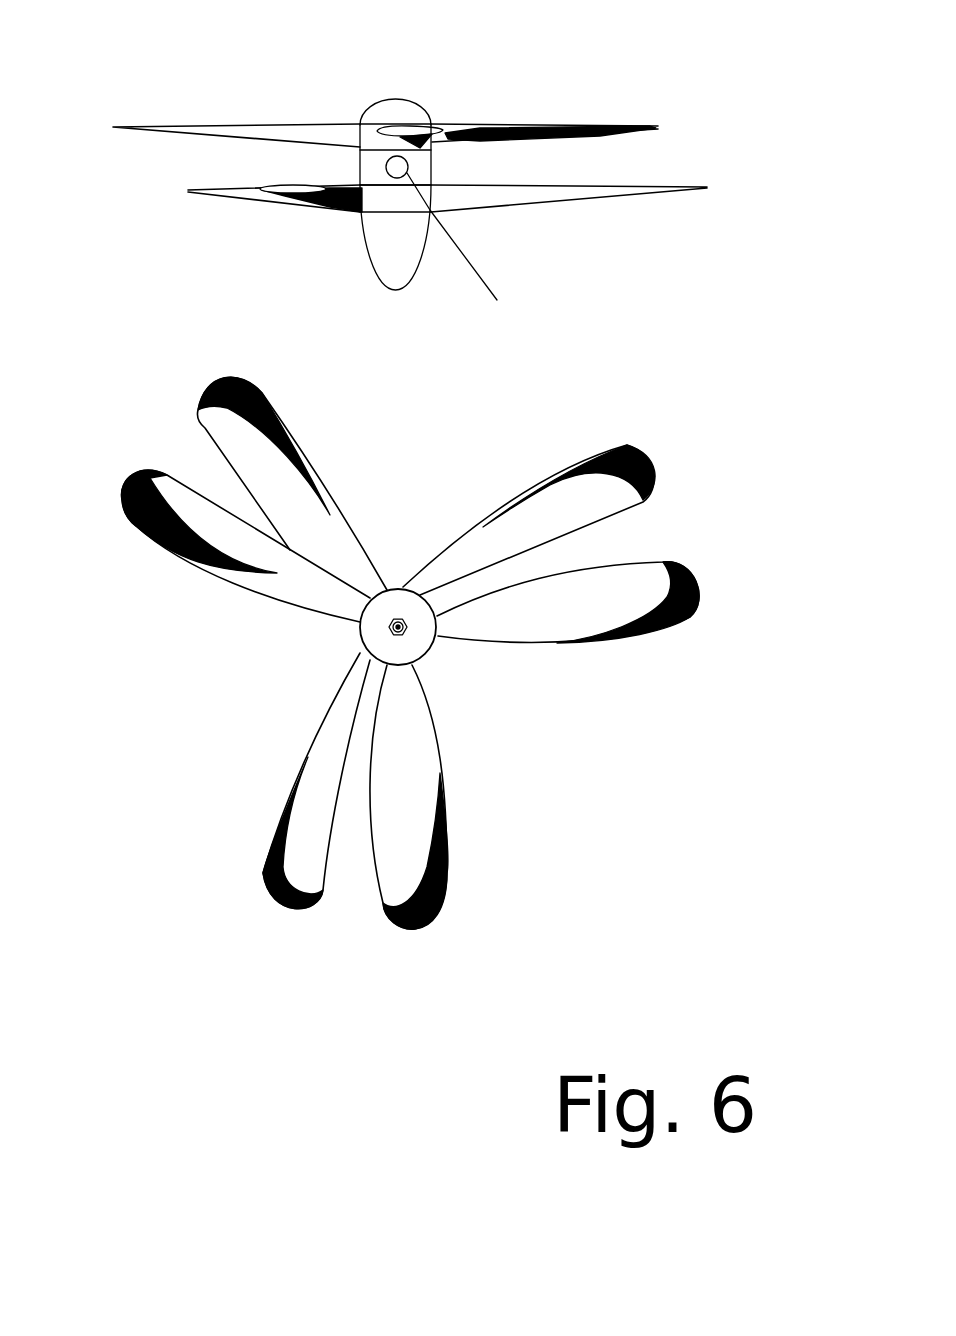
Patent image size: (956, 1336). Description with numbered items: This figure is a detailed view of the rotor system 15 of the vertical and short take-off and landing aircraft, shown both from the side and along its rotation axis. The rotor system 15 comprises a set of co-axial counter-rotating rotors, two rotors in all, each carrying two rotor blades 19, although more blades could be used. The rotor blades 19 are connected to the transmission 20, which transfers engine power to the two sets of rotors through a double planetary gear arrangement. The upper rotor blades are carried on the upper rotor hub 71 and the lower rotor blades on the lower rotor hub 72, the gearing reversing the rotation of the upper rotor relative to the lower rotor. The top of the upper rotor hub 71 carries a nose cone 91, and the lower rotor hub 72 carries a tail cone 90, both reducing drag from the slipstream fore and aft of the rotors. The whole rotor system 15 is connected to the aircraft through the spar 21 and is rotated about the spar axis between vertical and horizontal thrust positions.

The rotor system 15 is at (675, 153).
The rotor blades 19 is at (425, 122).
The transmission 20 is at (433, 173).
The spar 21 is at (474, 247).
The upper rotor hub 71 is at (370, 137).
The lower rotor hub 72 is at (390, 198).
The tail cone 90 is at (368, 267).
The nose cone 91 is at (378, 105).